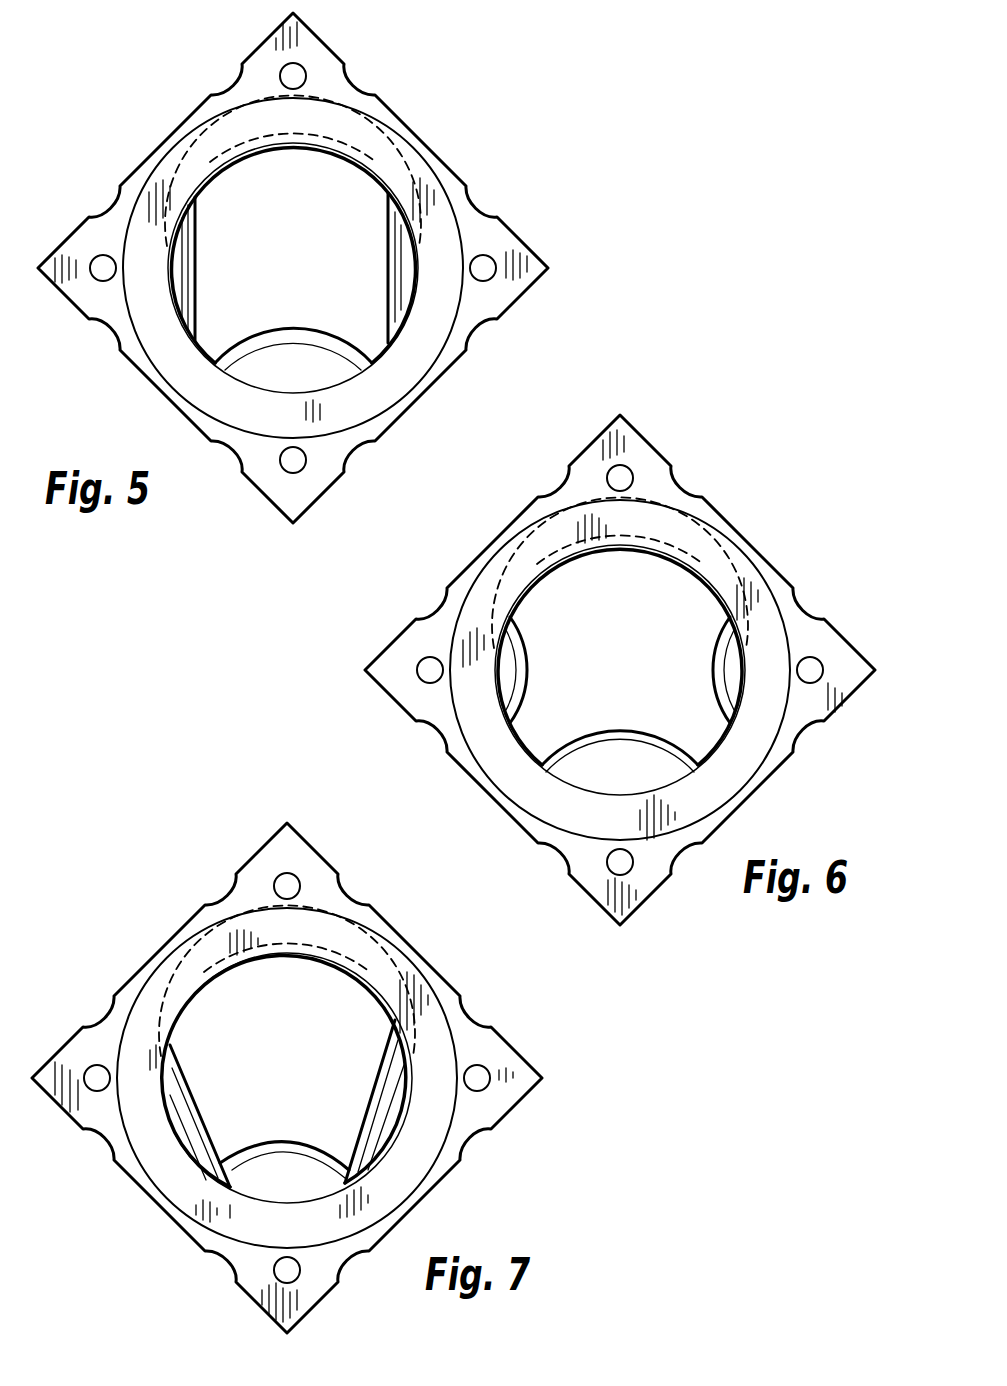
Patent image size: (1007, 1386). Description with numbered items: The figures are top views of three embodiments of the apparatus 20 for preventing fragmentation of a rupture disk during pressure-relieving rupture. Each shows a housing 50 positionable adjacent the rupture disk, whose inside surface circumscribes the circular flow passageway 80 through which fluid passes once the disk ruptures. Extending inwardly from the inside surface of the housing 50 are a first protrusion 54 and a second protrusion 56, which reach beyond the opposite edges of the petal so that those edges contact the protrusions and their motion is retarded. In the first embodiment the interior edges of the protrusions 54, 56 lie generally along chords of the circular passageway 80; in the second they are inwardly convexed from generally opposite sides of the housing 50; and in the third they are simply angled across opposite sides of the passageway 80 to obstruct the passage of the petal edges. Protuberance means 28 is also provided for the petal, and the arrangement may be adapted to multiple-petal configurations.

In FIG. 5, the apparatus for preventing fragmentation of a rupture disk 20 is at (396, 87).
In FIG. 6, the apparatus for preventing fragmentation of a rupture disk 20 is at (755, 524).
In FIG. 7, the apparatus for preventing fragmentation of a rupture disk 20 is at (440, 946).
In FIG. 5, the housing 50 is at (442, 175).
In FIG. 6, the housing 50 is at (652, 465).
In FIG. 7, the housing 50 is at (322, 885).
In FIG. 5, the circular passageway 80 is at (266, 208).
In FIG. 6, the circular passageway 80 is at (625, 597).
In FIG. 7, the circular passageway 80 is at (296, 1016).
In FIG. 5, the first protrusion 54 is at (183, 249).
In FIG. 6, the first protrusion 54 is at (524, 678).
In FIG. 7, the first protrusion 54 is at (188, 1123).
In FIG. 5, the second protrusion 56 is at (398, 258).
In FIG. 6, the second protrusion 56 is at (724, 678).
In FIG. 7, the second protrusion 56 is at (388, 1088).
In FIG. 5, the protuberance means 28 is at (273, 359).
In FIG. 6, the protuberance means 28 is at (607, 755).
In FIG. 7, the protuberance means 28 is at (268, 1158).